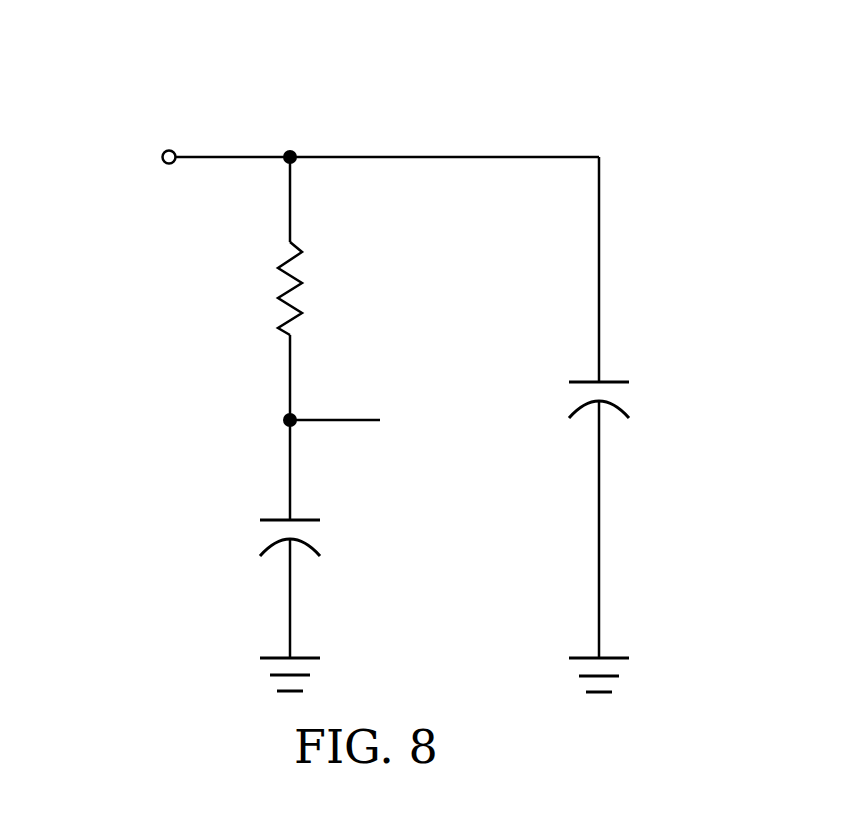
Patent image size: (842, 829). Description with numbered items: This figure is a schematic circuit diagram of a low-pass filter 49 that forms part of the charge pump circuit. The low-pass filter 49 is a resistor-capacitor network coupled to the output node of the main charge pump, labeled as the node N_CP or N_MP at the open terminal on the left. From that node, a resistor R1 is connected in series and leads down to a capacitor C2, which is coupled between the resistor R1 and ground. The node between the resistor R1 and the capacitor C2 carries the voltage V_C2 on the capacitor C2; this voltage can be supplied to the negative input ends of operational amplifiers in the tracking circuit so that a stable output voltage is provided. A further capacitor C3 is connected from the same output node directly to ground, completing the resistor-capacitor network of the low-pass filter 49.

The low-pass filter 49 is at (124, 60).
The resistor R1 is at (309, 288).
The capacitor C2 is at (309, 555).
The capacitor C3 is at (618, 424).